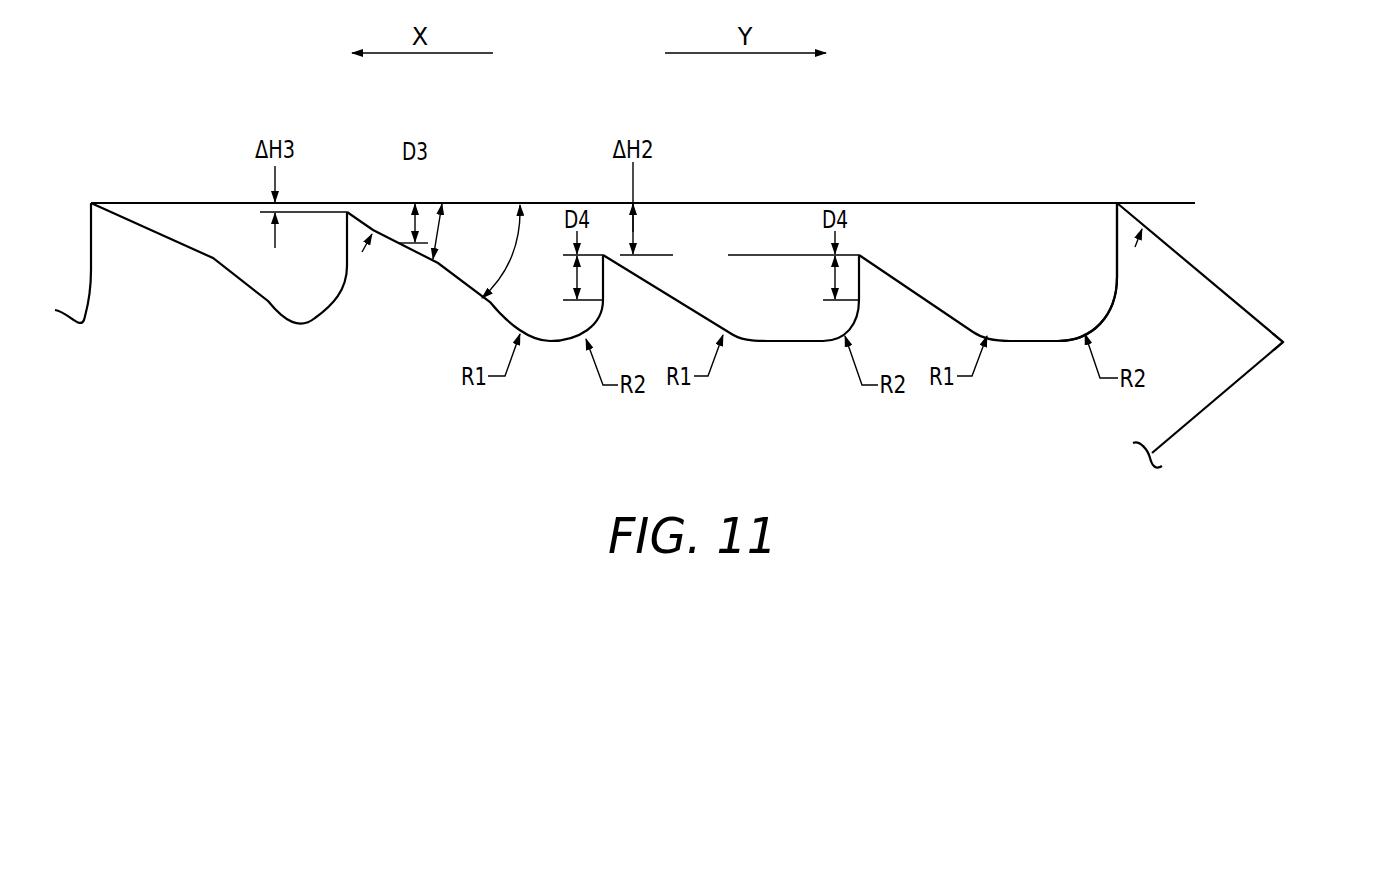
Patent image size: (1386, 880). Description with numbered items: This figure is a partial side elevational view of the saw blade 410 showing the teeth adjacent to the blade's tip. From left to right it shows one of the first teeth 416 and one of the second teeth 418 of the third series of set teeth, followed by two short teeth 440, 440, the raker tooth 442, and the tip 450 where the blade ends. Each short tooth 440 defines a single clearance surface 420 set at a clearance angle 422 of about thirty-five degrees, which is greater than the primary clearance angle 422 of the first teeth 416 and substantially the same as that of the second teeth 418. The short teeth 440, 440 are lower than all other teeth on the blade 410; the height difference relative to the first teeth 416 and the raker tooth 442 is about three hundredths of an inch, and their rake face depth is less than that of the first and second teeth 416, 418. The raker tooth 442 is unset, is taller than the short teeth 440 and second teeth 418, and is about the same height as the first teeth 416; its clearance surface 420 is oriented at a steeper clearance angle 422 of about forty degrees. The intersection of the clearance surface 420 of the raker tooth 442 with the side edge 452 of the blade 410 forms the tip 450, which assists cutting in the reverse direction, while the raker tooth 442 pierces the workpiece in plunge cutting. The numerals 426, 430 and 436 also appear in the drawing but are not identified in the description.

The saw blade 410 is at (848, 152).
The first teeth 416 is at (137, 263).
The second teeth 418 is at (373, 263).
The clearance surface 420 is at (948, 311).
The clearance angle 422 is at (375, 201).
The depth dimension 426 is at (446, 231).
The depth dimension 430 is at (603, 283).
The angle 436 is at (504, 251).
The short teeth 440 is at (632, 305).
The raker tooth 442 is at (1155, 269).
The tip 450 is at (1287, 345).
The side edge 452 is at (1204, 411).